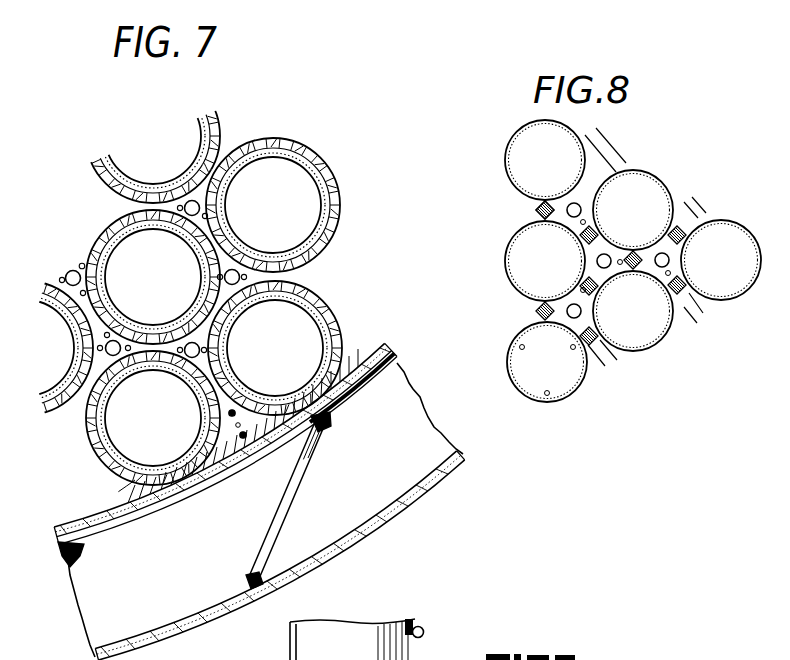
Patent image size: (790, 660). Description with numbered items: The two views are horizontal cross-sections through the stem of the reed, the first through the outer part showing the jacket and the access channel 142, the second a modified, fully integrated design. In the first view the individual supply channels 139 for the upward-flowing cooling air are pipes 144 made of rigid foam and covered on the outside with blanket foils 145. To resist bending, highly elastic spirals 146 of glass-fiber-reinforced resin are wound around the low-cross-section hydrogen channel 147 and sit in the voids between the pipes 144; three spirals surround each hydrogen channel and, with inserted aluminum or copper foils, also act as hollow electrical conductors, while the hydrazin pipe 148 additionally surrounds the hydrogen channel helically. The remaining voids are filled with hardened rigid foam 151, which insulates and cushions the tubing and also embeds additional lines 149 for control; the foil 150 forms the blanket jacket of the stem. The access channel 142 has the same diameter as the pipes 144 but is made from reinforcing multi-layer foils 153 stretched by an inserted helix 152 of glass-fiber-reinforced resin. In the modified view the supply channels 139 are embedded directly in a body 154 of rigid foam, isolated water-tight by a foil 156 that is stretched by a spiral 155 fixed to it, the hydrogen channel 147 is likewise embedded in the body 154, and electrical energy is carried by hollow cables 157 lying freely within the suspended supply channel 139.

In FIG. 7, the supply channel 139 is at (293, 187).
In FIG. 8, the supply channel 139 is at (522, 262).
In FIG. 7, the access channel 142 is at (415, 418).
In FIG. 7, the pipe 144 is at (97, 161).
In FIG. 7, the blanket foil 145 is at (207, 116).
In FIG. 7, the spiral 146 is at (81, 262).
In FIG. 7, the hydrogen channel 147 is at (65, 272).
In FIG. 8, the hydrogen channel 147 is at (572, 200).
In FIG. 7, the hydrazin pipe 148 is at (100, 297).
In FIG. 8, the hydrazin pipe 148 is at (593, 317).
In FIG. 7, the additional line 149 is at (238, 435).
In FIG. 7, the foil 150 is at (100, 517).
In FIG. 7, the rigid foam 151 is at (347, 357).
In FIG. 7, the helix 152 is at (311, 481).
In FIG. 7, the multi-layer foil 153 is at (420, 485).
In FIG. 8, the body 154 is at (530, 305).
In FIG. 8, the spiral 155 is at (530, 215).
In FIG. 8, the foil 156 is at (508, 172).
In FIG. 8, the hollow cable 157 is at (547, 389).